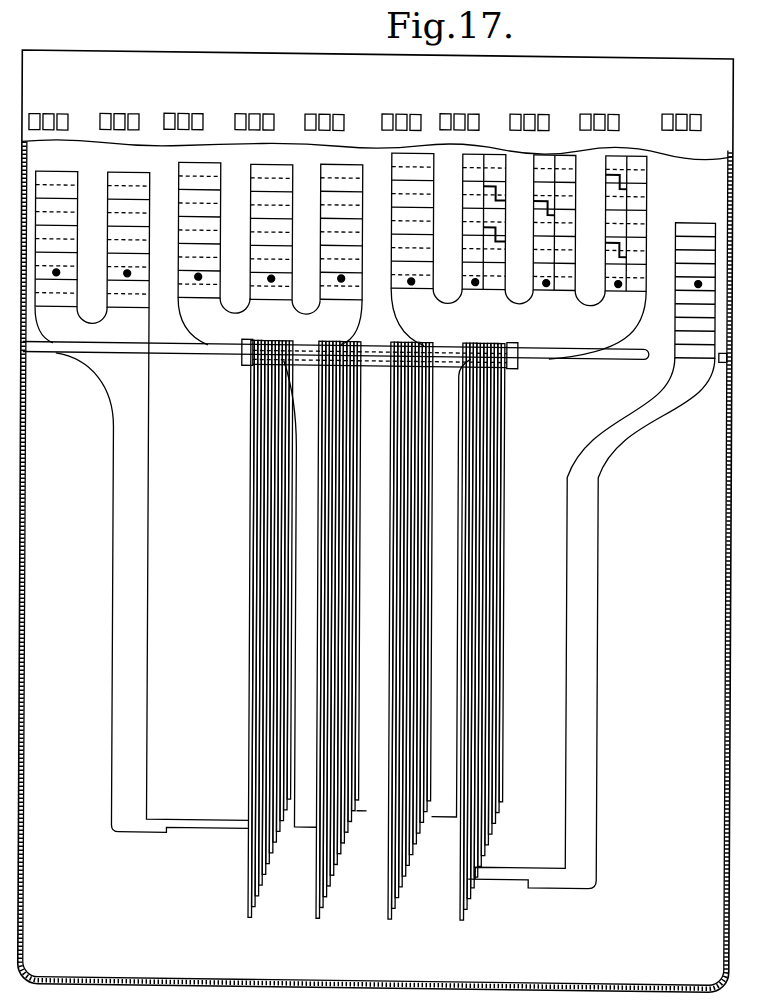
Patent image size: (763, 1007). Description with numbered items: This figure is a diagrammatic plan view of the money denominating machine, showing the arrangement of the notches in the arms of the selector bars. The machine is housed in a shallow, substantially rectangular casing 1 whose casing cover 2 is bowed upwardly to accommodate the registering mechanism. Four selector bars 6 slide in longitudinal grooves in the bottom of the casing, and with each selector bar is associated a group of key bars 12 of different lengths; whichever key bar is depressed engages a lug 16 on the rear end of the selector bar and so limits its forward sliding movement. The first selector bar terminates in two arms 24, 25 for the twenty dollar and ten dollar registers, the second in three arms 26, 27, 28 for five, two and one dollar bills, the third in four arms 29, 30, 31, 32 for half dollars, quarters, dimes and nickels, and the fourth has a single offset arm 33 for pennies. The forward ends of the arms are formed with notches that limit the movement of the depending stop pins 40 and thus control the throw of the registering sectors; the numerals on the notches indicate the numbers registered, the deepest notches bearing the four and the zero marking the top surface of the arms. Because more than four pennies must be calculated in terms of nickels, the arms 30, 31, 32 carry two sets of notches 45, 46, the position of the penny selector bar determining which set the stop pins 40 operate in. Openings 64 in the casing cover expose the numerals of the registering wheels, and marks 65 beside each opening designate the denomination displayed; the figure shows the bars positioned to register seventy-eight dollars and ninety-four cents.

The casing 1 is at (731, 583).
The casing cover 2 is at (578, 62).
The selector bars 6 is at (148, 628).
The key bars 12 is at (252, 724).
The lug 16 is at (205, 830).
The arm 24 is at (76, 306).
The arm 25 is at (148, 265).
The arm 26 is at (219, 294).
The arm 27 is at (291, 252).
The arm 28 is at (361, 263).
The arm 29 is at (432, 252).
The arm 30 is at (504, 207).
The arm 31 is at (574, 230).
The arm 32 is at (645, 186).
The offset arm 33 is at (705, 358).
The stop pins 40 is at (128, 279).
The notches 45 is at (470, 212).
The notches 46 is at (504, 218).
The openings 64 is at (44, 116).
The marks 65 is at (130, 80).